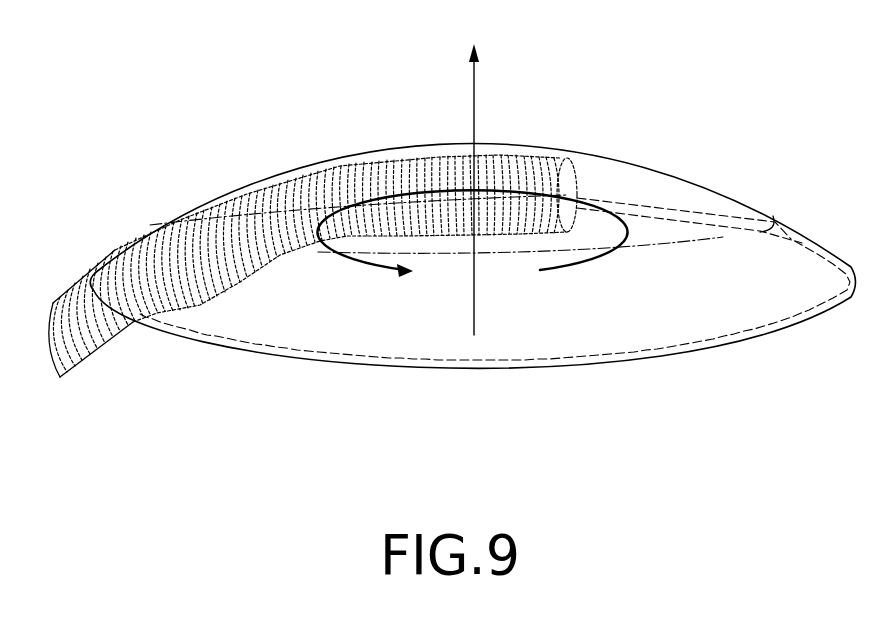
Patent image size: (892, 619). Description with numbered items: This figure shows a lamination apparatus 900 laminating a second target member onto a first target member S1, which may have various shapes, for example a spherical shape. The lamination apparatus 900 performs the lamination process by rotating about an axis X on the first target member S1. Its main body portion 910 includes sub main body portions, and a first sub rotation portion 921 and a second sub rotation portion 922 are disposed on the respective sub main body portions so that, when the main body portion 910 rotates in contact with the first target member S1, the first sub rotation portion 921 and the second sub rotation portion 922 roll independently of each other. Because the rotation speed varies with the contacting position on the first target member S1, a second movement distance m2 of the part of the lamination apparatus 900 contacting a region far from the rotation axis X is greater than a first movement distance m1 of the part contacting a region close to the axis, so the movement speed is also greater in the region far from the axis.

The lamination apparatus 900 is at (46, 384).
The main body portion 910 is at (47, 340).
The first sub rotation portion 921 is at (402, 160).
The second sub rotation portion 922 is at (172, 232).
The first movement distance m1 is at (503, 160).
The second movement distance m2 is at (737, 227).
The first target member S1 is at (713, 323).